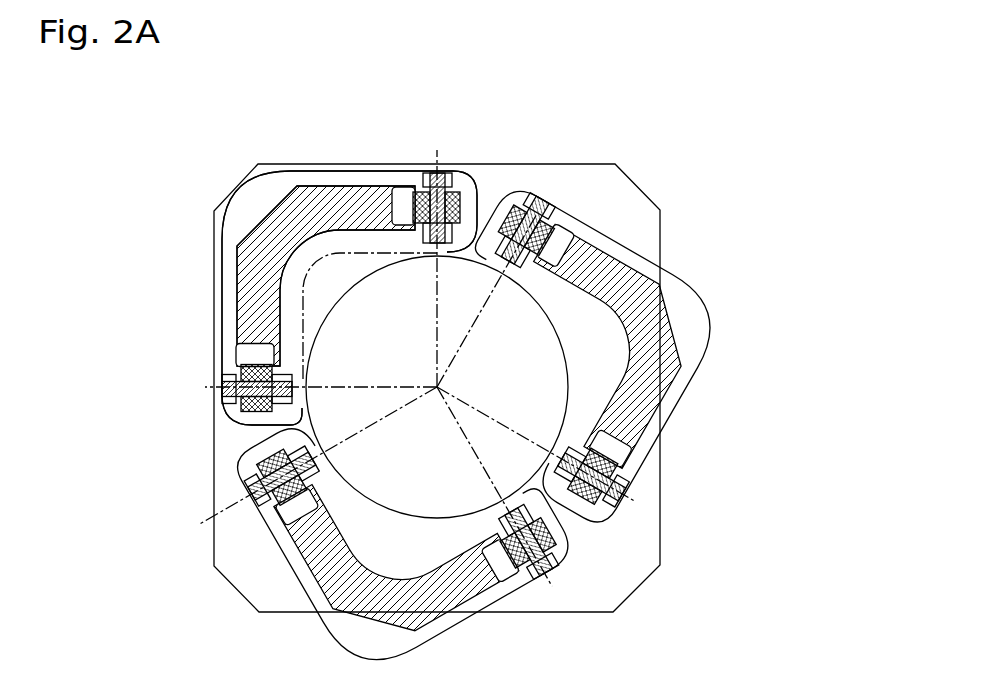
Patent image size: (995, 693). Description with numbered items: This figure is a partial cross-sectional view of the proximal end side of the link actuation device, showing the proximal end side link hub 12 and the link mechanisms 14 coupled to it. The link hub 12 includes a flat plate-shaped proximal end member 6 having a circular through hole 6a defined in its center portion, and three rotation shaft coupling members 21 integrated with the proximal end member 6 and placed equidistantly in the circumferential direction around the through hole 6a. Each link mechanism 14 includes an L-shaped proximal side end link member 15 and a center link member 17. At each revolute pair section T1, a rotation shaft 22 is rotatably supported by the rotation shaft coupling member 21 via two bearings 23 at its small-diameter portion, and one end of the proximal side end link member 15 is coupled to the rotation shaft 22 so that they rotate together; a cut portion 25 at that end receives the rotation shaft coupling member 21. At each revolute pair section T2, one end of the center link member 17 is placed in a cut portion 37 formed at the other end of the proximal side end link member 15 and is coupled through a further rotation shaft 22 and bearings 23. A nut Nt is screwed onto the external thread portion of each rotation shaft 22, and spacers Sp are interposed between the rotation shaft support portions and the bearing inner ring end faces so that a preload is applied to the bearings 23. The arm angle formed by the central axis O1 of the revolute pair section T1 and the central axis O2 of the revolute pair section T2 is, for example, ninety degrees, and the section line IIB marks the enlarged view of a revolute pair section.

The proximal end side link hub 12 is at (298, 92).
The proximal end member 6 is at (272, 172).
The through hole 6a is at (383, 340).
The rotation shaft coupling member 21 is at (330, 186).
The bearing 23 is at (422, 178).
The rotation shaft 22 is at (457, 200).
The nut Nt is at (453, 241).
The spacer Sp is at (478, 232).
The center link member 17 is at (243, 362).
The proximal side end link member 15 is at (300, 218).
The link mechanism 14 is at (683, 306).
The cut portion 37 is at (558, 246).
The cut portion 25 is at (608, 447).
The revolute pair section T1 is at (440, 146).
The revolute pair section T2 is at (556, 196).
The central axis O1 is at (437, 294).
The central axis O2 is at (327, 388).
The section line IIB is at (215, 285).